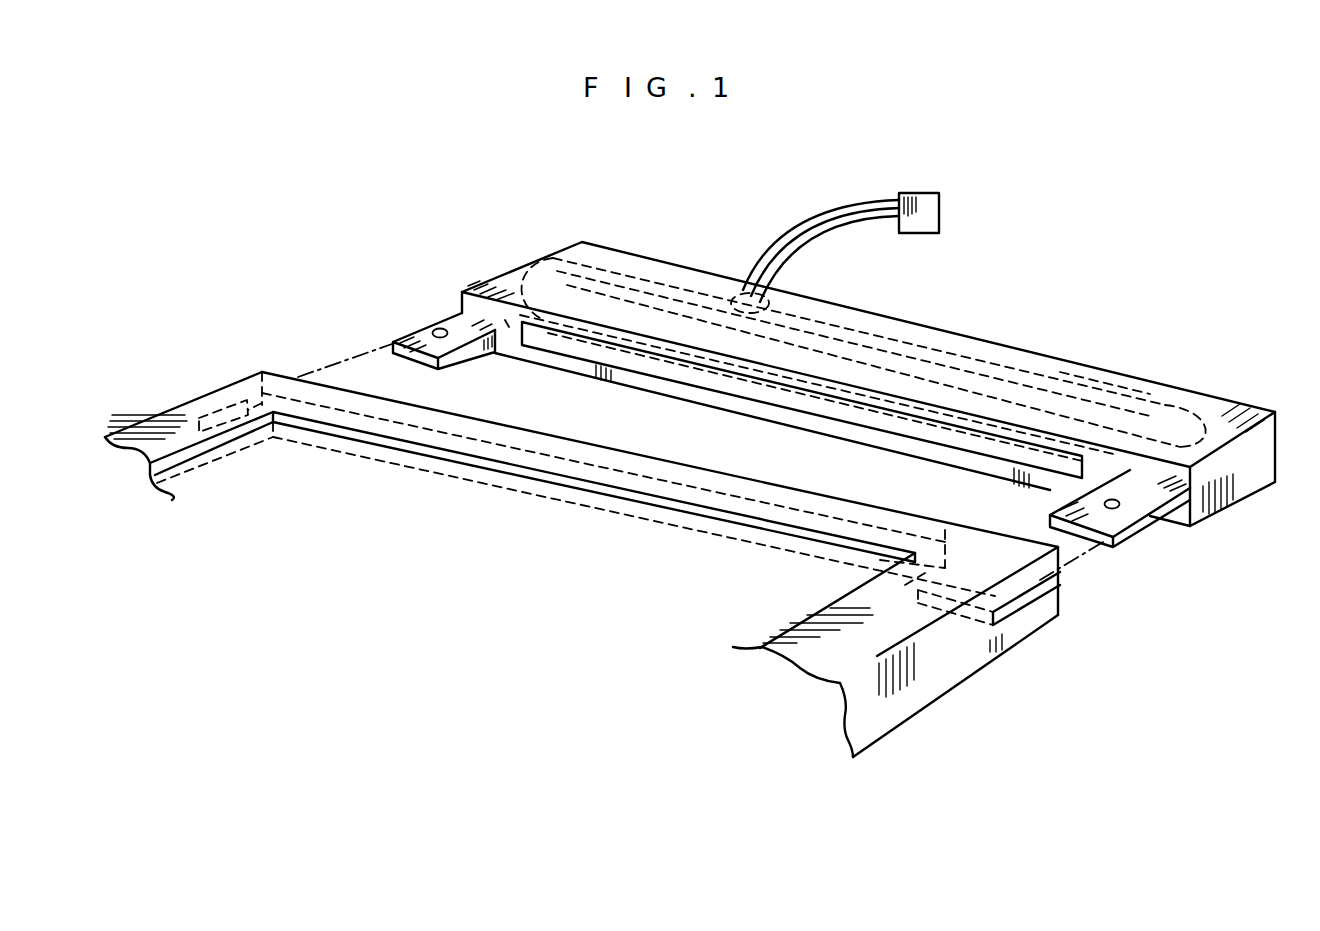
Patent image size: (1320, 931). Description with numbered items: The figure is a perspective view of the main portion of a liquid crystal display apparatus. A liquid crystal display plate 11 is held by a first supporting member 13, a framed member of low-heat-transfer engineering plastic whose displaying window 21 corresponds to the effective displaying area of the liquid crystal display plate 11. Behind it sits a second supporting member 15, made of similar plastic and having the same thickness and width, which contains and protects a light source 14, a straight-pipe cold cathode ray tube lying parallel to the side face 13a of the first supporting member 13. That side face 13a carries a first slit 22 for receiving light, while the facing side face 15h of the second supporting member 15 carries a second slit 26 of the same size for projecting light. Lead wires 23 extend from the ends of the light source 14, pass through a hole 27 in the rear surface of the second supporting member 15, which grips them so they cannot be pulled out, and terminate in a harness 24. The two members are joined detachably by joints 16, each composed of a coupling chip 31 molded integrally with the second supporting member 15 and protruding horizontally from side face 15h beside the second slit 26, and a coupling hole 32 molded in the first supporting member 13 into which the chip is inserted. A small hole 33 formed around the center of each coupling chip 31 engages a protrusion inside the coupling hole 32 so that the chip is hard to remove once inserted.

The liquid crystal display plate 11 is at (518, 554).
The first supporting member 13 is at (918, 678).
The side face 13a is at (987, 523).
The light source 14 is at (1087, 407).
The second supporting member 15 is at (1250, 482).
The side face 15h is at (507, 322).
The joint 16 is at (377, 283).
The displaying window 21 is at (863, 585).
The first slit 22 is at (417, 455).
The lead wire 23 is at (808, 222).
The harness 24 is at (935, 214).
The second slit 26 is at (871, 418).
The hole 27 is at (748, 292).
The coupling chip 31 is at (433, 323).
The coupling hole 32 is at (247, 378).
The small hole 33 is at (440, 328).